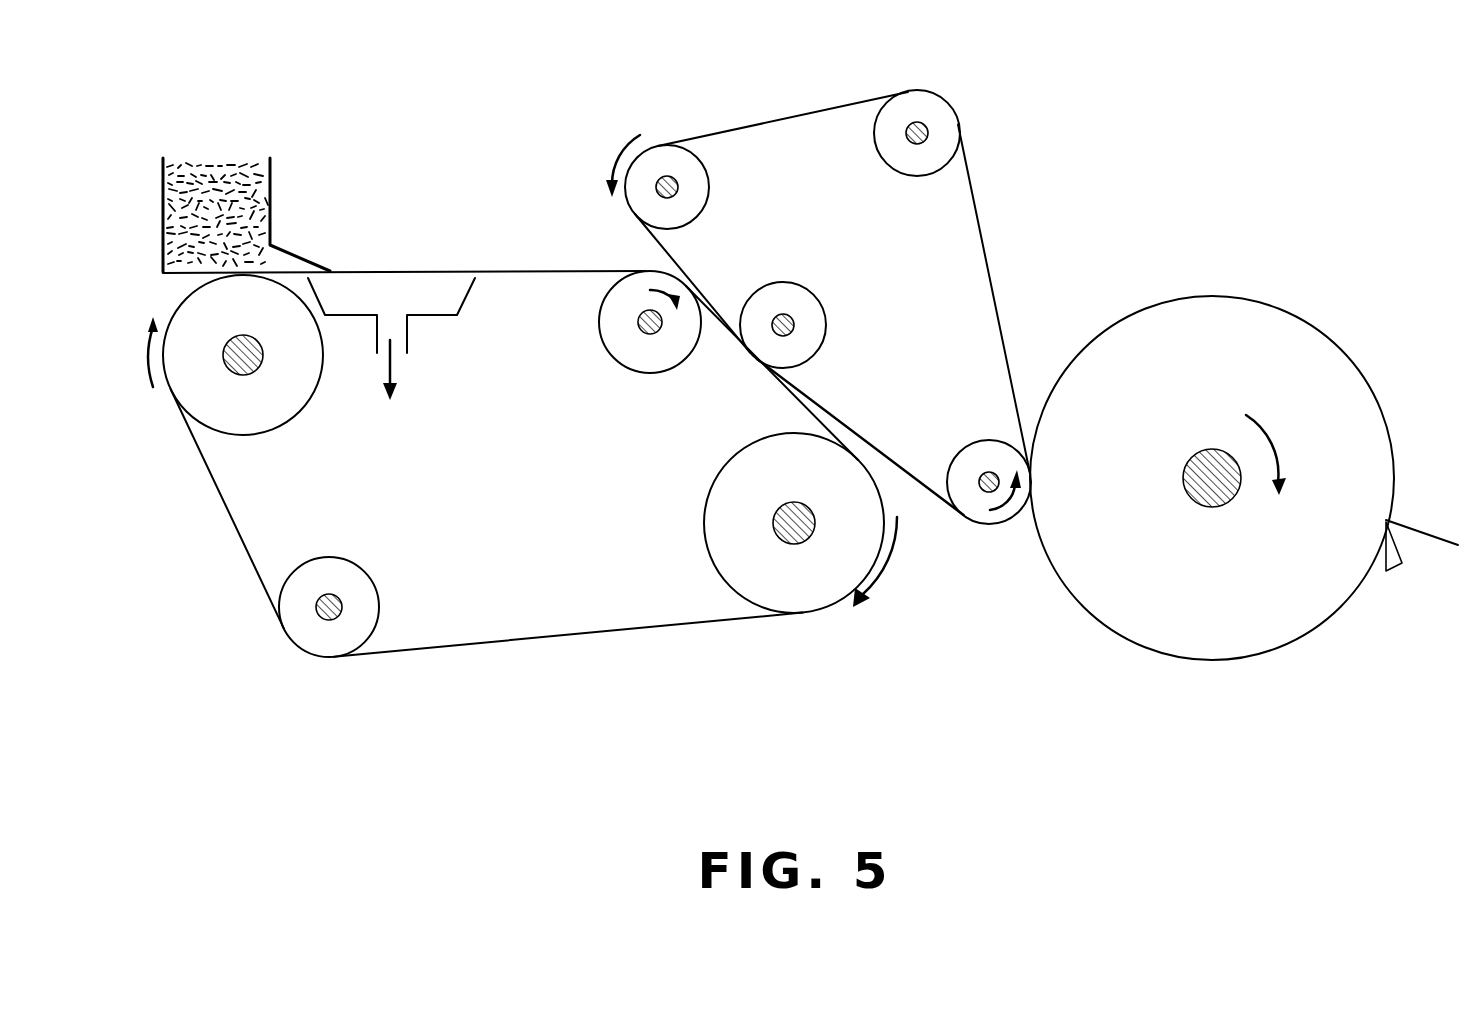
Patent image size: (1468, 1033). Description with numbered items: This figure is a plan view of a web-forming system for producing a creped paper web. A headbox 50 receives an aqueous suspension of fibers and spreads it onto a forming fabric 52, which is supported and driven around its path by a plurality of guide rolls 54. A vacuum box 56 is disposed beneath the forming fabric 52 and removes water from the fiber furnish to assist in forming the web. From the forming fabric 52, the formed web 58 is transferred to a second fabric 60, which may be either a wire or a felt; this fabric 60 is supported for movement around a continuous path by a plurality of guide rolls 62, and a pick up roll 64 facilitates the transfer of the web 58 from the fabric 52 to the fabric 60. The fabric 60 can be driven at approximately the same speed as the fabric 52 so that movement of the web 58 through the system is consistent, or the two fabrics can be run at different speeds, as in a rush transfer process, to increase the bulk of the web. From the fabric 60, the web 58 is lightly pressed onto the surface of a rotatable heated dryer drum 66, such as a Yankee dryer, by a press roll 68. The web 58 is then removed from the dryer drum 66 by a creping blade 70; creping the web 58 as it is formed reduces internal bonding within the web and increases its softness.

The headbox 50 is at (272, 183).
The forming fabric 52 is at (485, 270).
The guide rolls 54 is at (288, 407).
The vacuum box 56 is at (435, 320).
The formed web 58 is at (572, 270).
The second fabric 60 is at (677, 253).
The guide rolls 62 is at (697, 166).
The pick up roll 64 is at (810, 320).
The dryer drum 66 is at (1139, 635).
The press roll 68 is at (972, 455).
The creping blade 70 is at (1390, 575).